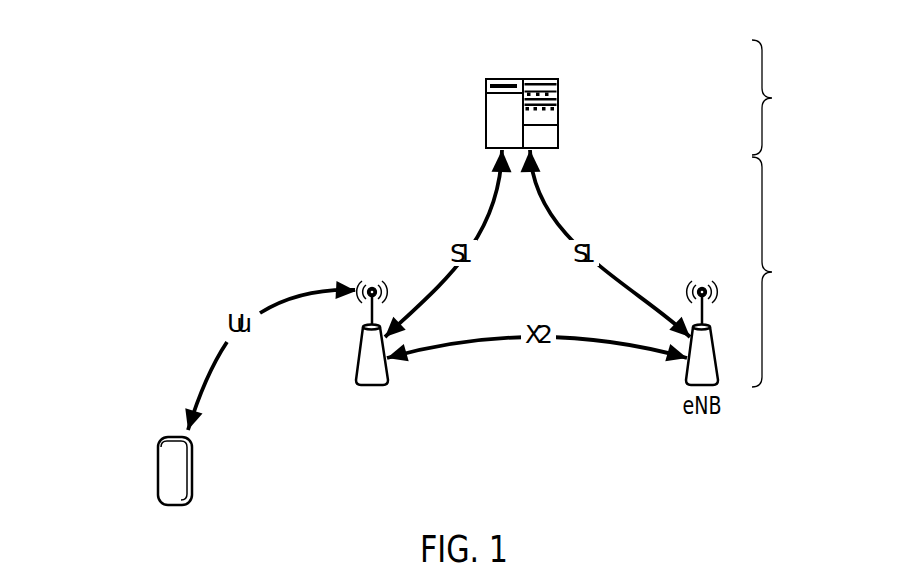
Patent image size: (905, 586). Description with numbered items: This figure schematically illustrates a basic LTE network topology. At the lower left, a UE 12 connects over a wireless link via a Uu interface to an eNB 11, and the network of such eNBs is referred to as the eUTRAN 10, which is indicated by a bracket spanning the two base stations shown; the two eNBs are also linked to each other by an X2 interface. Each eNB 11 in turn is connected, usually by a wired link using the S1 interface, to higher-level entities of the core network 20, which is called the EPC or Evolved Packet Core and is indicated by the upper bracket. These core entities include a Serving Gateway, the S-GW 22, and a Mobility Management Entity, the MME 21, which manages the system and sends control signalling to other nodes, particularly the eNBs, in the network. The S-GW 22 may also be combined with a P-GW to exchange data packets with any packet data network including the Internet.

The eUTRAN 10 is at (779, 272).
The eNB 11 is at (370, 422).
The UE 12 is at (148, 482).
The core network 20 is at (779, 97).
The MME 21 is at (547, 42).
The S-GW 22 is at (482, 42).